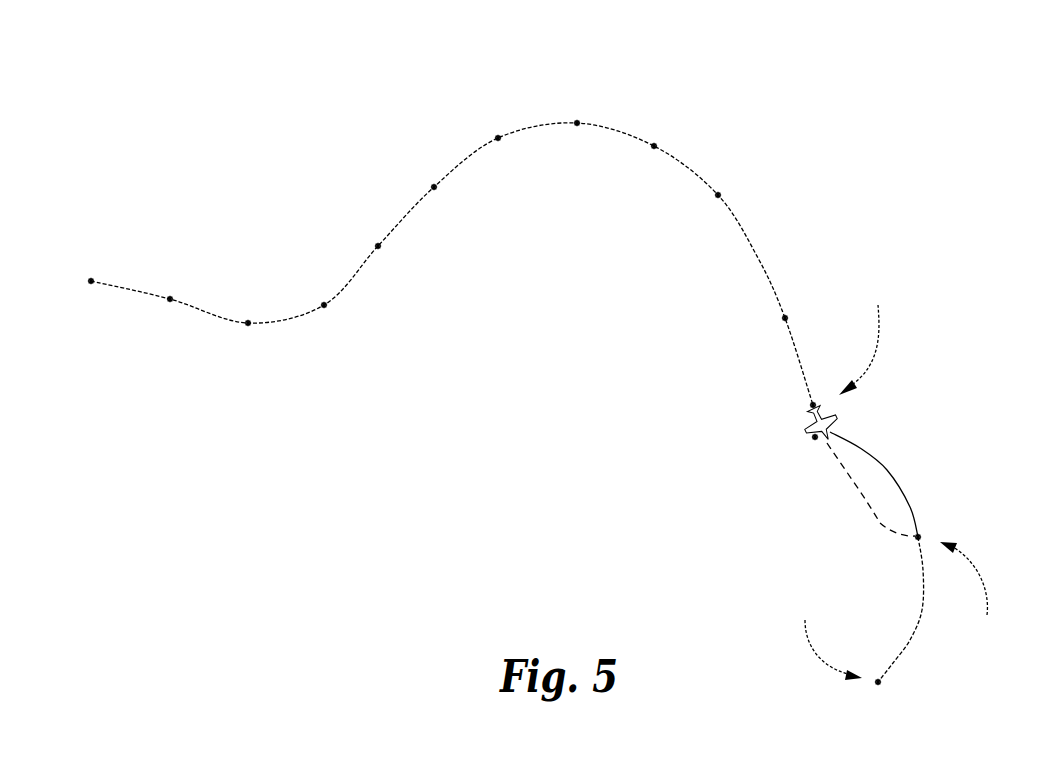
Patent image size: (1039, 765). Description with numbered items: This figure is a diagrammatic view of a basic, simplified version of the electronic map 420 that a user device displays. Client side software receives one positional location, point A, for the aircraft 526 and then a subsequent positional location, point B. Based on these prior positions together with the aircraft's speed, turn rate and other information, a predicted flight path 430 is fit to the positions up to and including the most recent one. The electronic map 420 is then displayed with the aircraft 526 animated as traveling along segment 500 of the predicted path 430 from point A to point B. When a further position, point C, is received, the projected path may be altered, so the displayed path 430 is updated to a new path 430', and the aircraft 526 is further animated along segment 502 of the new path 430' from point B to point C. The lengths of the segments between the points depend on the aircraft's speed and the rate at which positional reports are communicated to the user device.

The electronic map 420 is at (200, 123).
The predicted flight path 430 is at (465, 264).
The new path 430' is at (917, 486).
The segment 500 is at (853, 492).
The segment 502 is at (923, 620).
The aircraft 526 is at (810, 431).